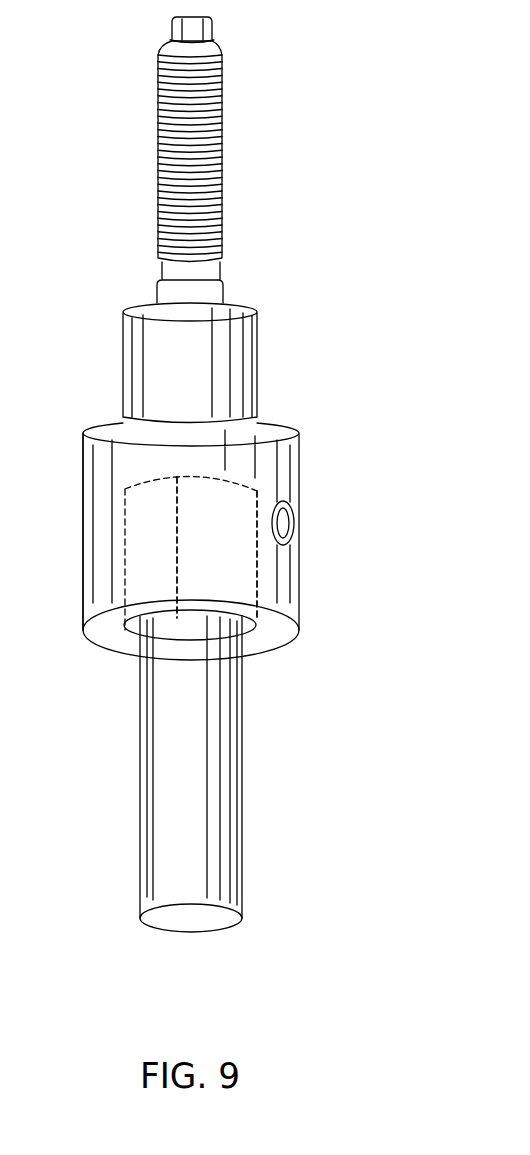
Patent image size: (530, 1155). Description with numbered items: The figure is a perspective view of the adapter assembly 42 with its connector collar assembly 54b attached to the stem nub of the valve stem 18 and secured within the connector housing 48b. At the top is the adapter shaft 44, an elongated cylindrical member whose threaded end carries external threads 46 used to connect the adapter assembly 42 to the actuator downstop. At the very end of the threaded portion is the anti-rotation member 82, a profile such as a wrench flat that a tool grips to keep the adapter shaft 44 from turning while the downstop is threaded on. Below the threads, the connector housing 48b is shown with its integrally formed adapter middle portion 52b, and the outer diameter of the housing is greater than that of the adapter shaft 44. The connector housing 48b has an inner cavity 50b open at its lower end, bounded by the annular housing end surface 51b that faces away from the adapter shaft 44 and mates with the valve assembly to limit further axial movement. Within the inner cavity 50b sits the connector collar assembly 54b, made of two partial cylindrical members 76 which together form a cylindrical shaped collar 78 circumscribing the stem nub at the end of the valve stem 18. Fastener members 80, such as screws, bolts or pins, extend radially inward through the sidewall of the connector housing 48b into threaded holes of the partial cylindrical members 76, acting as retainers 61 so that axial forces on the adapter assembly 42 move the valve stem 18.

The valve stem 18 is at (227, 870).
The adapter assembly 42 is at (330, 290).
The adapter shaft 44 is at (225, 132).
The external threads 46 is at (220, 194).
The connector housing 48b is at (268, 455).
The inner cavity 50b is at (125, 593).
The housing end surface 51b is at (273, 632).
The adapter middle portion 52b is at (237, 362).
The connector collar assembly 54b is at (155, 497).
The retainer 61 is at (331, 502).
The partial cylindrical member 76 is at (133, 630).
The cylindrical shaped collar 78 is at (262, 578).
The fastener member 80 is at (288, 527).
The anti-rotation member 82 is at (192, 28).